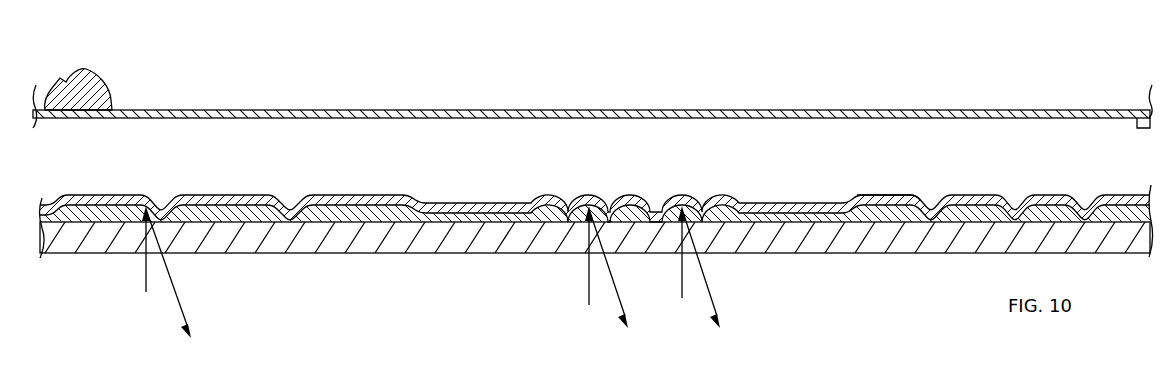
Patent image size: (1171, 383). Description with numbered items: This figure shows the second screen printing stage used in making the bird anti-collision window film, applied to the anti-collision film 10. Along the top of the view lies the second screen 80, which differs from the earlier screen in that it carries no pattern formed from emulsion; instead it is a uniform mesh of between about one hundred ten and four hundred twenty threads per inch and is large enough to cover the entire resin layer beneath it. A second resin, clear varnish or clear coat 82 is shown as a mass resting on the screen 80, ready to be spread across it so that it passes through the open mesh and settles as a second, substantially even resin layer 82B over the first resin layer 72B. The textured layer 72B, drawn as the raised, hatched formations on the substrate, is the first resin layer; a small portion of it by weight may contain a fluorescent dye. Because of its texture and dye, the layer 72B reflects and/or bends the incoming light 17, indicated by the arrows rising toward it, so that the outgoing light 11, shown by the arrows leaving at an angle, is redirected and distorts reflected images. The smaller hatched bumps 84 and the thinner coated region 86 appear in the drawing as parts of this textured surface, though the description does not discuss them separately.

The anti-collision film 10 is at (192, 73).
The second screen 80 is at (333, 108).
The clear coat 82 is at (86, 68).
The second resin layer 82B is at (870, 193).
The protrusions 84 is at (258, 193).
The conformal layer 86 is at (429, 203).
The textured layer 72B is at (360, 253).
The incoming light 17 is at (142, 277).
The outgoing light 11 is at (178, 281).